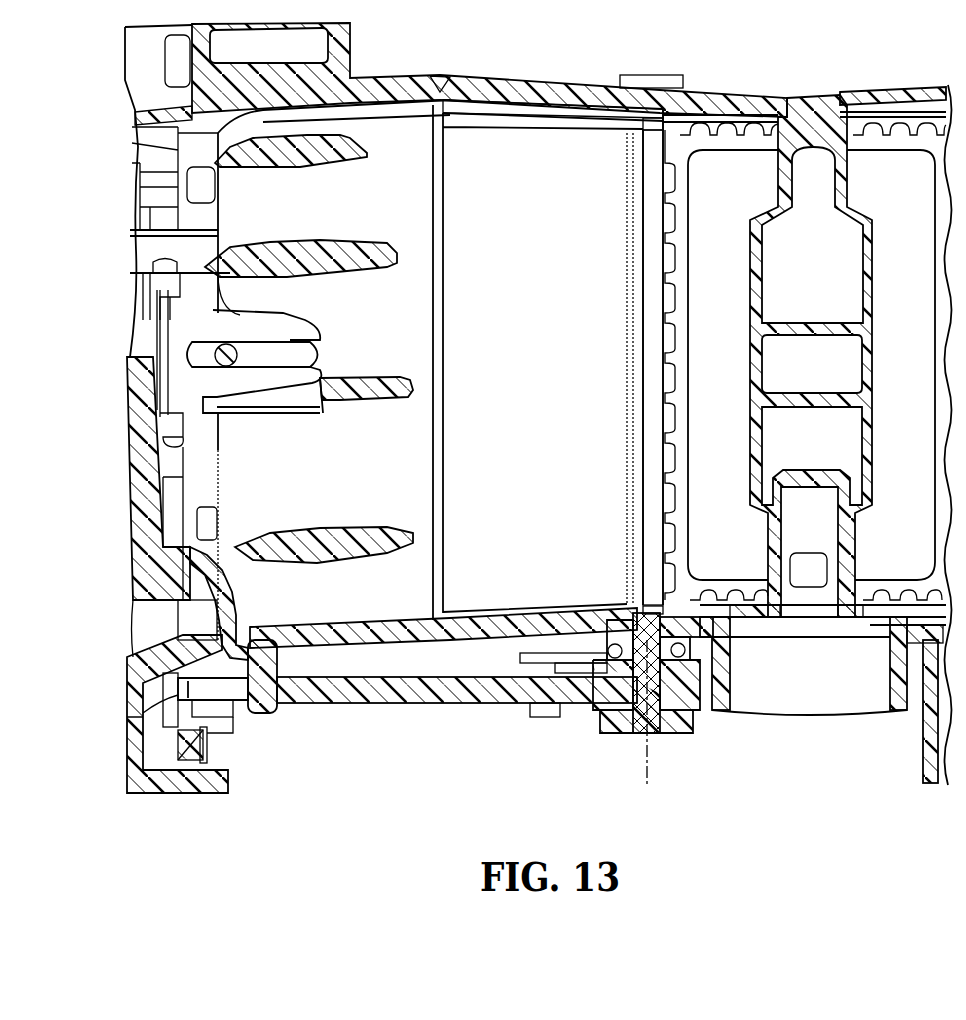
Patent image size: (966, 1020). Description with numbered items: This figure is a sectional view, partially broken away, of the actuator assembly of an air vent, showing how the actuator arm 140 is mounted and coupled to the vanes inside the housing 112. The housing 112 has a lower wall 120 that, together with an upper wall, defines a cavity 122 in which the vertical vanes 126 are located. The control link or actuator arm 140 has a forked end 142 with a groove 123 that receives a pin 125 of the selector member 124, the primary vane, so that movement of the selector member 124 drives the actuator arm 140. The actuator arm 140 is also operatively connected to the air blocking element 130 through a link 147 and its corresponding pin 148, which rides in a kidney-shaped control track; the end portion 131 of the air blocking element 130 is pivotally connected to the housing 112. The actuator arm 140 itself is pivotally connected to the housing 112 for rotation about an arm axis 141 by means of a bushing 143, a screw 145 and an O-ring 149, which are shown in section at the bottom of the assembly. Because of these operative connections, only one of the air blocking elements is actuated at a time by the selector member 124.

The housing 112 is at (463, 72).
The lower wall 120 is at (773, 93).
The cavity 122 is at (555, 155).
The groove 123 is at (297, 683).
The selector member 124 is at (133, 575).
The pin 125 is at (268, 713).
The vertical vanes 126 is at (397, 257).
The air blocking element 130 is at (565, 118).
The end portion 131 is at (667, 143).
The actuator arm 140 is at (362, 705).
The arm axis 141 is at (650, 760).
The forked end 142 is at (132, 730).
The bushing 143 is at (597, 705).
The screw 145 is at (665, 735).
The link 147 is at (520, 660).
The pin 148 is at (545, 717).
The O-ring 149 is at (684, 650).